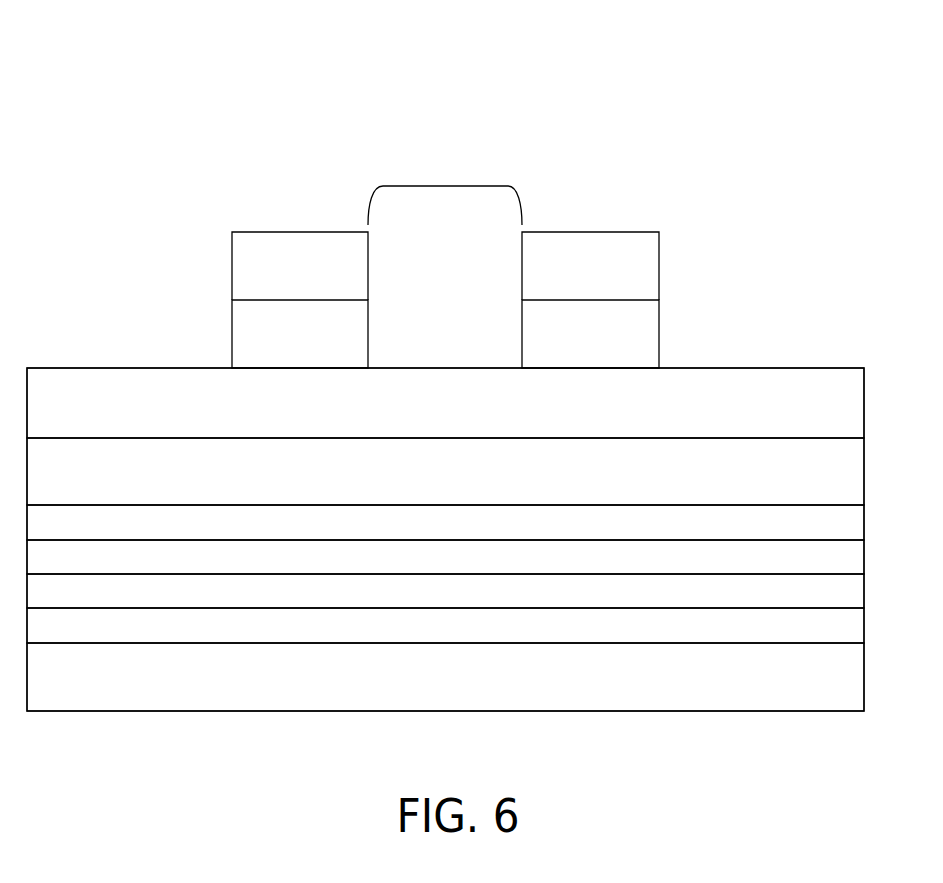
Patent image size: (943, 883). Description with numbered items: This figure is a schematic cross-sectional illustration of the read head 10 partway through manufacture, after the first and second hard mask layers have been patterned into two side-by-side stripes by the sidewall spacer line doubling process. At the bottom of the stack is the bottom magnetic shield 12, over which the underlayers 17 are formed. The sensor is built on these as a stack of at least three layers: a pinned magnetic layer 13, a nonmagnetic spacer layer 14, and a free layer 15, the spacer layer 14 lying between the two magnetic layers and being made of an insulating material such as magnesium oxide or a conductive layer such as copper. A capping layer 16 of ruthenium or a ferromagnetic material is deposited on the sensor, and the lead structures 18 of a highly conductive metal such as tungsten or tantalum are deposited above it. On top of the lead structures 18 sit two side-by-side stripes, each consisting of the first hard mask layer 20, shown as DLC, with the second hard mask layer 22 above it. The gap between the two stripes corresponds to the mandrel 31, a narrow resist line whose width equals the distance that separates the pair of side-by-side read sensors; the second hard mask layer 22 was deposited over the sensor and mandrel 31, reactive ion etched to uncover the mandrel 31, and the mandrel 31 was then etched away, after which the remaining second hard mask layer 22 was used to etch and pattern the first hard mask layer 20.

The read head 10 is at (447, 48).
The bottom magnetic shield 12 is at (290, 686).
The underlayers 17 is at (290, 636).
The pinned magnetic layer 13 is at (290, 600).
The nonmagnetic spacer layer 14 is at (290, 566).
The free layer 15 is at (290, 532).
The capping layer 16 is at (290, 484).
The lead structures 18 is at (290, 414).
The first hard mask layer 20 is at (275, 337).
The second hard mask layer 22 is at (274, 277).
The mandrel 31 is at (446, 186).